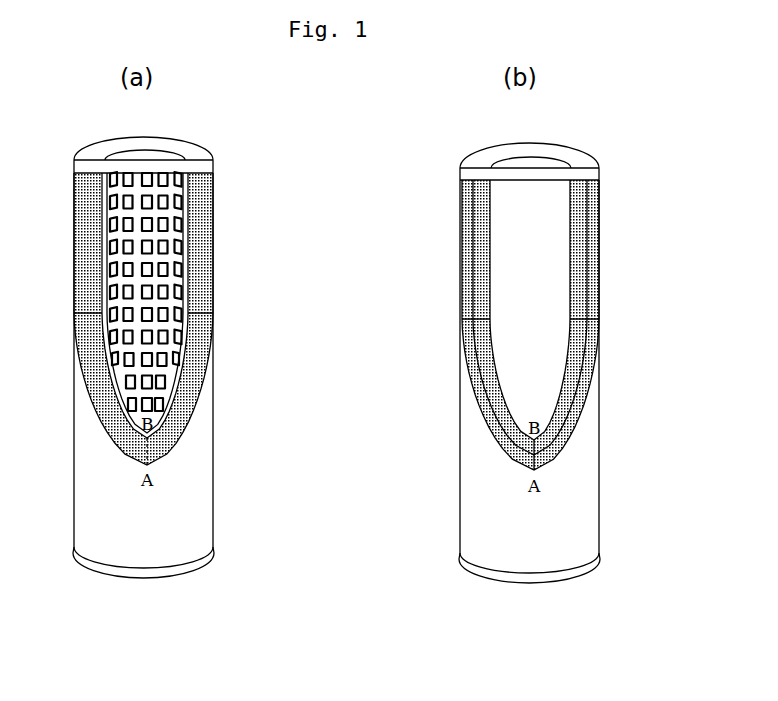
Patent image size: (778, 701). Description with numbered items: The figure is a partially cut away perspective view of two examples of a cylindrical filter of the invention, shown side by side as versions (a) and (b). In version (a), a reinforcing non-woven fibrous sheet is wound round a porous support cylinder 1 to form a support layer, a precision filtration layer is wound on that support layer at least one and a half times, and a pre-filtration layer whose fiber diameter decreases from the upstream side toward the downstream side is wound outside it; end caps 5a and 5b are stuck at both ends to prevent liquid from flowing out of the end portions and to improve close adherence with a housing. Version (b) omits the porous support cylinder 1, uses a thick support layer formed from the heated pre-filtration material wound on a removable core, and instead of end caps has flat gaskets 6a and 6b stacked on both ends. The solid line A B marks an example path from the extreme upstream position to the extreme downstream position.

The porous support cylinder 1 is at (165, 397).
The end cap 5a is at (178, 572).
The end cap 5b is at (190, 155).
The flat gasket 6a is at (573, 577).
The flat gasket 6b is at (577, 162).